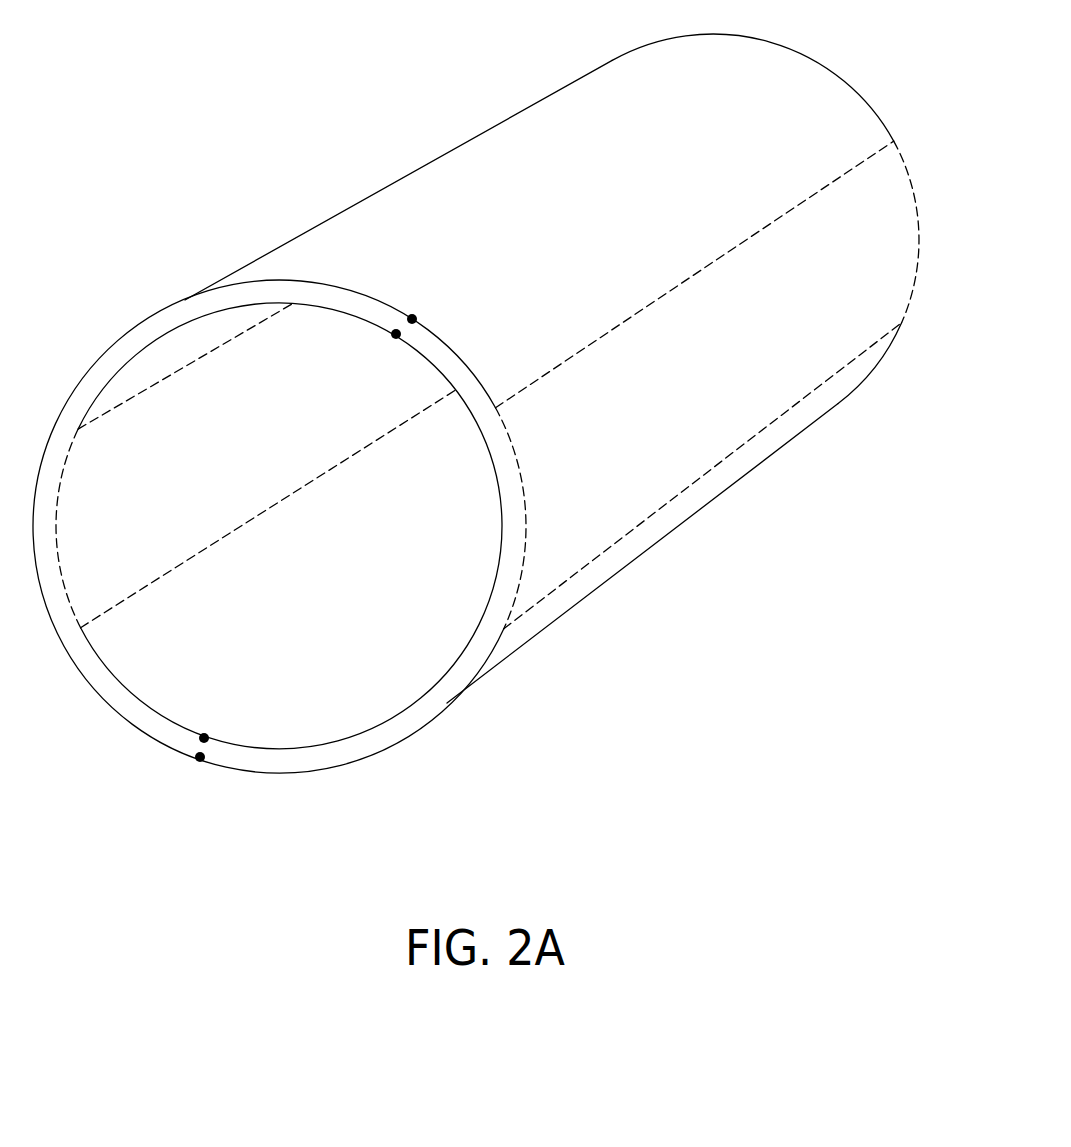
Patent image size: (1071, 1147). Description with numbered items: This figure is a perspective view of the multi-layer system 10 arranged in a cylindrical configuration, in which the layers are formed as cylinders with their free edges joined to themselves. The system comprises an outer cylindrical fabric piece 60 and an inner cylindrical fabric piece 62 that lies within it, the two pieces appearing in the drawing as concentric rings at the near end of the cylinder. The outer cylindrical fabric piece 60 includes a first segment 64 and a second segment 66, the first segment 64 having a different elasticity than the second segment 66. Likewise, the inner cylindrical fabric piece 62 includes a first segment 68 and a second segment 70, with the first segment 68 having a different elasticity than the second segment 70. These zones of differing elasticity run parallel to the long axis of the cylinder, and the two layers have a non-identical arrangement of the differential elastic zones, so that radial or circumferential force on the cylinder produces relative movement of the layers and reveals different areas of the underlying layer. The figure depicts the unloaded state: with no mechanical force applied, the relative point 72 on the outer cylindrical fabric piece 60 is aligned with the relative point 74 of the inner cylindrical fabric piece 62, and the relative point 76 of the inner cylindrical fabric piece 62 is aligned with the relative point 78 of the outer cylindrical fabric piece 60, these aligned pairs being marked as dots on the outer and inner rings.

The multi-layer system 10 is at (229, 80).
The outer cylindrical fabric piece 60 is at (415, 170).
The inner cylindrical fabric piece 62 is at (128, 360).
The first segment 64 is at (572, 192).
The second segment 66 is at (630, 462).
The first segment 68 is at (97, 552).
The second segment 70 is at (400, 592).
The relative point 72 is at (412, 319).
The relative point 74 is at (396, 334).
The relative point 76 is at (204, 738).
The relative point 78 is at (200, 757).